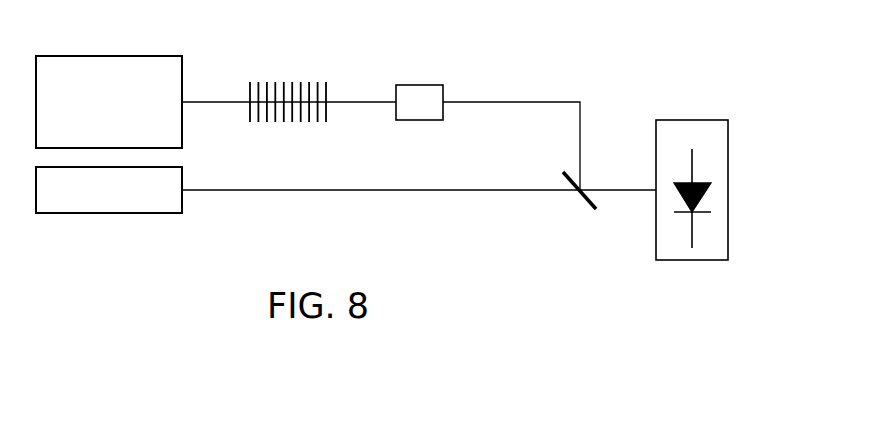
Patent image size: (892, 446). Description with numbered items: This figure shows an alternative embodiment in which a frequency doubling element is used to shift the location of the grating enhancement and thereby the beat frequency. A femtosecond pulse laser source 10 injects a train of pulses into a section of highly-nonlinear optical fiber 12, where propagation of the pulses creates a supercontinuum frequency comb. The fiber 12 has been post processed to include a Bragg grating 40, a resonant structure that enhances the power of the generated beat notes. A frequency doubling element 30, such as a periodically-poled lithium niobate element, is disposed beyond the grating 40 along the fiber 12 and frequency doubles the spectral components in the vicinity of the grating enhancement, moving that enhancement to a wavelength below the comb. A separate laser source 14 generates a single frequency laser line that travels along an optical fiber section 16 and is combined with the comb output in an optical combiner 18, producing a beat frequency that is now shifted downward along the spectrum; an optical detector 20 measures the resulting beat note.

The femtosecond pulse laser source 10 is at (110, 55).
The Bragg grating 40 is at (296, 73).
The frequency doubling element 30 is at (419, 83).
The highly-nonlinear optical fiber 12 is at (512, 100).
The laser source 14 is at (108, 215).
The optical fiber section 16 is at (482, 192).
The optical combiner 18 is at (588, 201).
The optical detector 20 is at (691, 119).